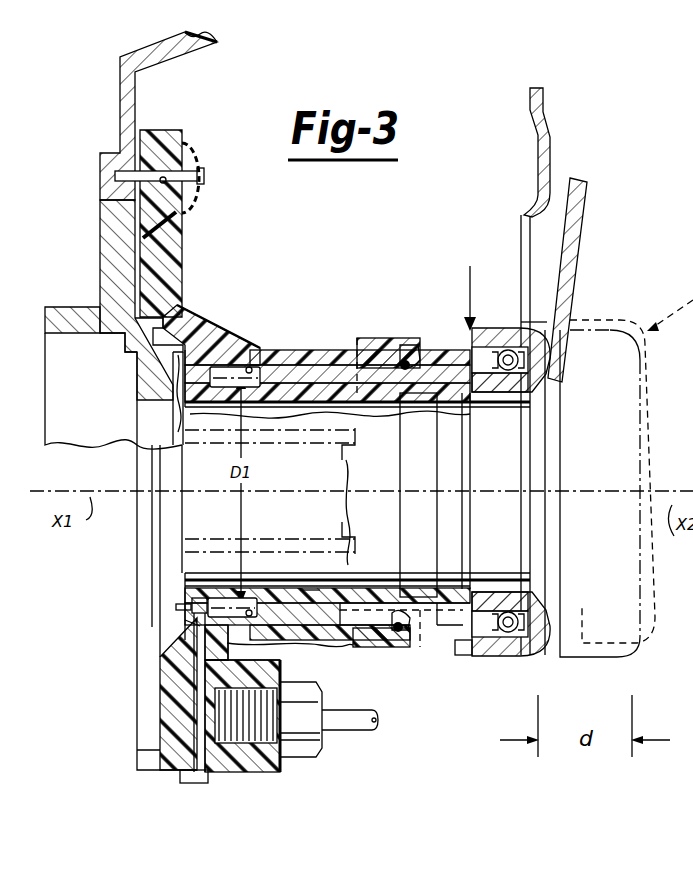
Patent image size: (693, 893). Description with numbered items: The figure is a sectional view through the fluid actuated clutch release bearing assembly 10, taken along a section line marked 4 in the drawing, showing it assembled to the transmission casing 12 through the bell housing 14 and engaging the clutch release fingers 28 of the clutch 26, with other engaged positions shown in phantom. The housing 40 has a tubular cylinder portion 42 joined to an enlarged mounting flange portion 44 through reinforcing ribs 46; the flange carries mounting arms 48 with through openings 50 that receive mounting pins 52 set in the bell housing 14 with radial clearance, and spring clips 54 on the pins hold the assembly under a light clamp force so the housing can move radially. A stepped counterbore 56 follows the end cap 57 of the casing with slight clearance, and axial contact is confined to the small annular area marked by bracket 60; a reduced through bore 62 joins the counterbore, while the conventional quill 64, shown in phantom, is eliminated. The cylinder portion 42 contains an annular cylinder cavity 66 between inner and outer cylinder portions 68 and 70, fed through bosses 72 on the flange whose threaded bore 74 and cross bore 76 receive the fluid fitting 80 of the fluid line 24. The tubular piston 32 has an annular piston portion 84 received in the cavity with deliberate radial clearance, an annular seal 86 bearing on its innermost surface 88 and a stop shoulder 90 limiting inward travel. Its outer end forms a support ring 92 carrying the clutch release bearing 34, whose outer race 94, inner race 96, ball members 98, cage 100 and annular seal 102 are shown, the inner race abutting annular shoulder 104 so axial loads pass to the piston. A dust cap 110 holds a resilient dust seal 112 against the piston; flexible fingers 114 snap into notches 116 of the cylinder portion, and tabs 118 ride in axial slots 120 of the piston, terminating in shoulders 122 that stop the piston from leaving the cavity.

The section line 4- 4 is at (466, 285).
The clutch release bearing assembly 10 is at (366, 773).
The transmission casing 12 is at (97, 228).
The bell housing 14 is at (147, 42).
The fluid line 24 is at (363, 732).
The clutch 26 is at (660, 180).
The clutch release fingers 28 is at (572, 252).
The piston 32 is at (462, 648).
The clutch release bearing 34 is at (492, 322).
The housing 40 is at (266, 779).
The cylinder portion 42 is at (307, 432).
The mounting flange portion 44 is at (170, 695).
The reinforcing ribs 46 is at (210, 322).
The mounting arms 48 is at (162, 135).
The through opening 50 is at (185, 215).
The mounting pins 52 is at (116, 175).
The spring clips 54 is at (192, 146).
The stepped counterbore 56 is at (172, 585).
The end cap 57 is at (130, 372).
The contact area 60 is at (172, 388).
The through bore 62 is at (222, 575).
The quill 64 is at (353, 455).
The cylinder cavity 66 is at (250, 362).
The inner annular cylinder portion 68 is at (300, 590).
The outer annular cylinder portion 70 is at (272, 648).
The bosses 72 is at (235, 768).
The threaded bore 74 is at (215, 765).
The cross bore 76 is at (178, 752).
The fluid fitting 80 is at (318, 758).
The piston portion 84 is at (412, 412).
The annular seal 86 is at (280, 358).
The innermost surface 88 is at (272, 375).
The stop shoulder 90 is at (425, 583).
The support ring 92 is at (503, 395).
The outer race 94 is at (524, 656).
The inner race 96 is at (505, 603).
The ball members 98 is at (535, 330).
The cage 100 is at (511, 373).
The annular seal 102 is at (470, 655).
The annular shoulder 104 is at (466, 396).
The dust cap 110 is at (375, 330).
The dust seal 112 is at (402, 352).
The flexible fingers 114 is at (385, 648).
The notches 116 is at (398, 612).
The tabs 118 is at (448, 633).
The axial slots 120 is at (192, 623).
The shoulders 122 is at (178, 607).